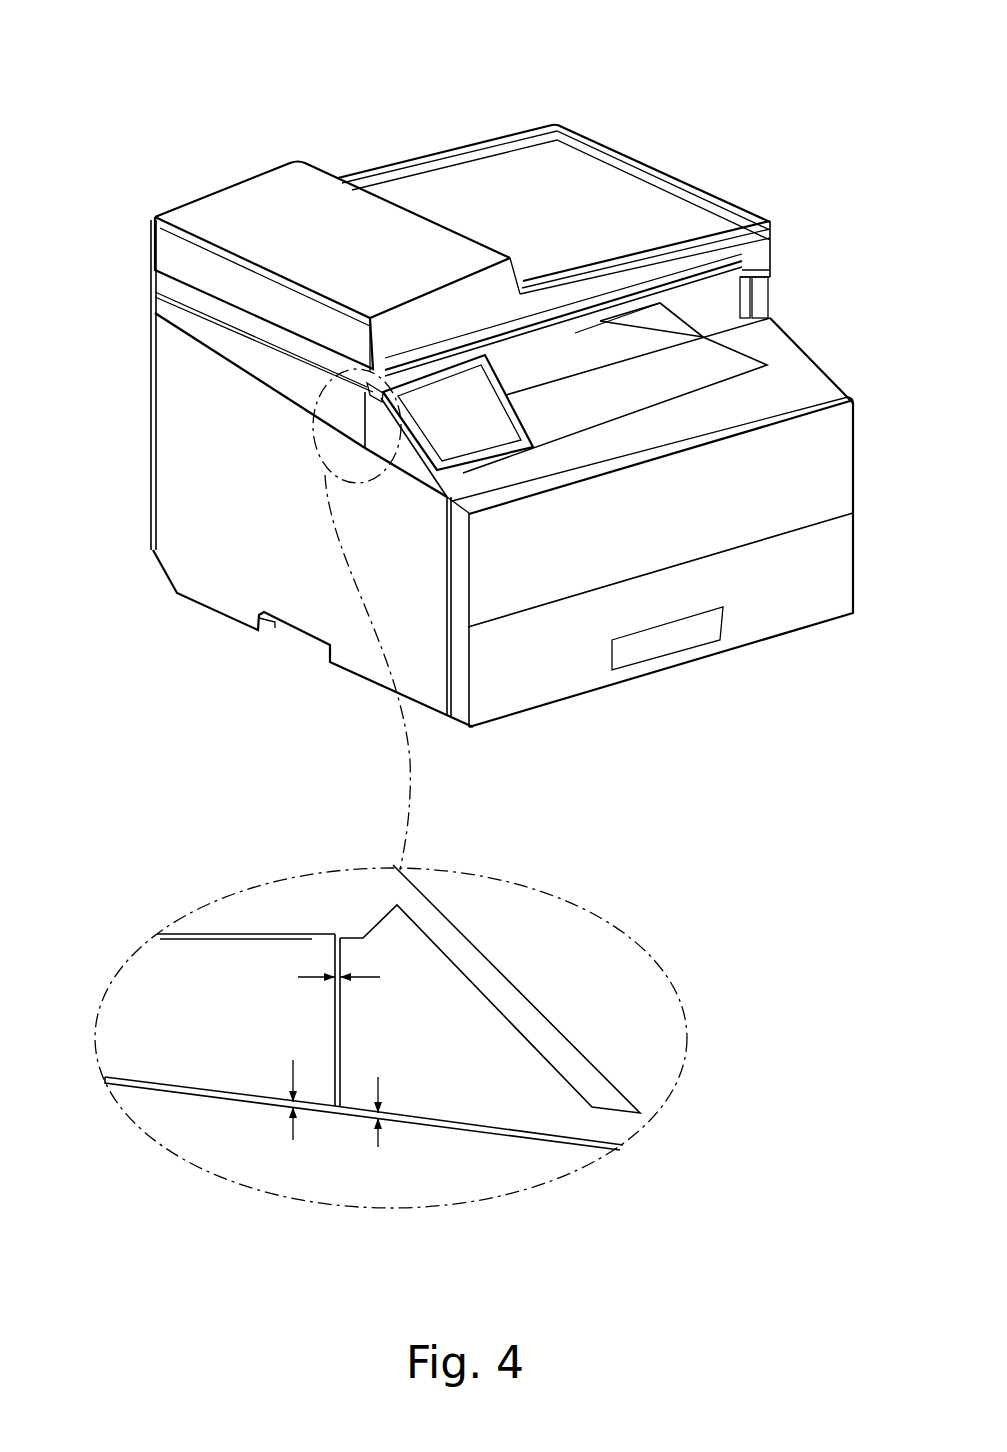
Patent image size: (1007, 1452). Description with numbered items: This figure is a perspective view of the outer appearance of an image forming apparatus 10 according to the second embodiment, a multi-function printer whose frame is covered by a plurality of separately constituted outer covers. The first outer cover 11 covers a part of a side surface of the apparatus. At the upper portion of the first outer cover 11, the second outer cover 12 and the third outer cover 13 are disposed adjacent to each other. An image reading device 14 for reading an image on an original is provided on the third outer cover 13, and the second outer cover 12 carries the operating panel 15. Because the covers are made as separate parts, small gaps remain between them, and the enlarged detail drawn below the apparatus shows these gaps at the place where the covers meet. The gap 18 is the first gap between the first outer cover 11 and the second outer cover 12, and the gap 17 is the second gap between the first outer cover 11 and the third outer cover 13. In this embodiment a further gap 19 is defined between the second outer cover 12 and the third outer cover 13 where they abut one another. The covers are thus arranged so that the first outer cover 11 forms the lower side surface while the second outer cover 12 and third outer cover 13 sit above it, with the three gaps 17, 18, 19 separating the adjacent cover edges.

The image forming apparatus 10 is at (600, 110).
The first outer cover 11 is at (250, 572).
The second outer cover 12 is at (415, 465).
The third outer cover 13 is at (257, 360).
The image reading device 14 is at (293, 212).
The operating panel 15 is at (457, 410).
The second gap 17 is at (293, 1140).
The first gap 18 is at (378, 1147).
The gap 19 is at (310, 977).